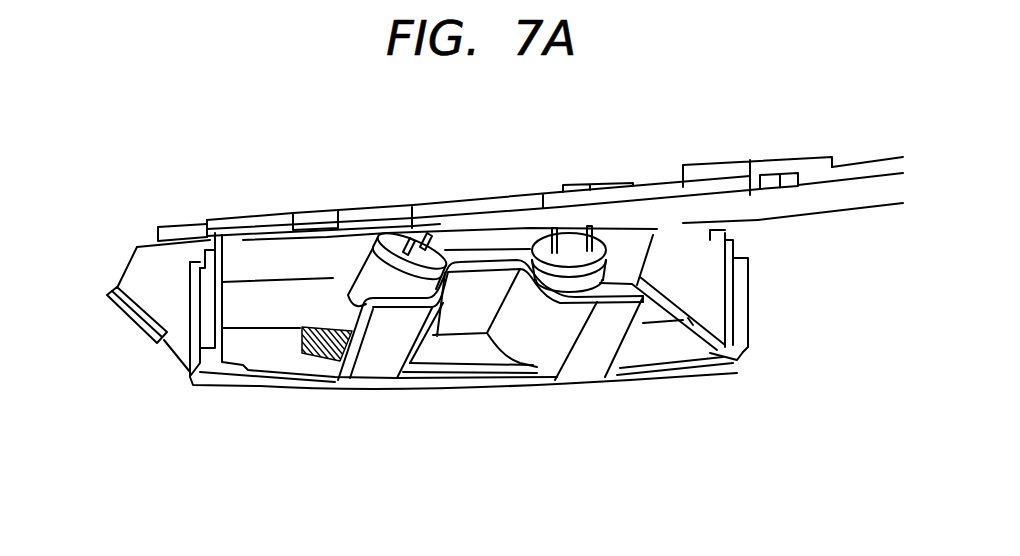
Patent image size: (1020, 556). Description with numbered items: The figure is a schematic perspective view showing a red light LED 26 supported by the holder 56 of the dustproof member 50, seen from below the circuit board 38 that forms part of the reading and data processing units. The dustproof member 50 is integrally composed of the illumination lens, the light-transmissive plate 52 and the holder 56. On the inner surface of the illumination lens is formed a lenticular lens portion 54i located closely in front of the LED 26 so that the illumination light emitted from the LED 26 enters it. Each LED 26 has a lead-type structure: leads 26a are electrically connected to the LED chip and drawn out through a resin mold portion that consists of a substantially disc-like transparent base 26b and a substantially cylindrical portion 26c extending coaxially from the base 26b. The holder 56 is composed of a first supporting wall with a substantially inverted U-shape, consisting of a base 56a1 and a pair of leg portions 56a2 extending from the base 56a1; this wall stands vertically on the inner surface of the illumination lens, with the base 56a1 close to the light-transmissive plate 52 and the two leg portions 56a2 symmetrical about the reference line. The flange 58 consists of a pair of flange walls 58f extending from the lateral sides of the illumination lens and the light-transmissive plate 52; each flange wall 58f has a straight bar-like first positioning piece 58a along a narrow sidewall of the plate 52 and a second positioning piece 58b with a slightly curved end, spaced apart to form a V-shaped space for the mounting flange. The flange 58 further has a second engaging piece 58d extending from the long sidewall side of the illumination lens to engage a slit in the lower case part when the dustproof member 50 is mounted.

The circuit board 38 is at (857, 174).
The dustproof member 50 is at (176, 257).
The light-transmissive plate 52 is at (237, 313).
The lenticular lens portions 54i is at (315, 318).
The holder 56 is at (390, 336).
The base 56a1 is at (477, 283).
The leg portions 56a2 is at (557, 340).
The flange 58 is at (138, 274).
The first guide and positioning piece 58a is at (127, 318).
The second guide and positioning piece 58b is at (191, 340).
The second engaging piece 58d is at (340, 385).
The flange walls 58f is at (150, 258).
The LEDs 26 is at (378, 278).
The leads 26a is at (433, 213).
The base 26b is at (382, 213).
The cylindrical portion 26c is at (358, 295).